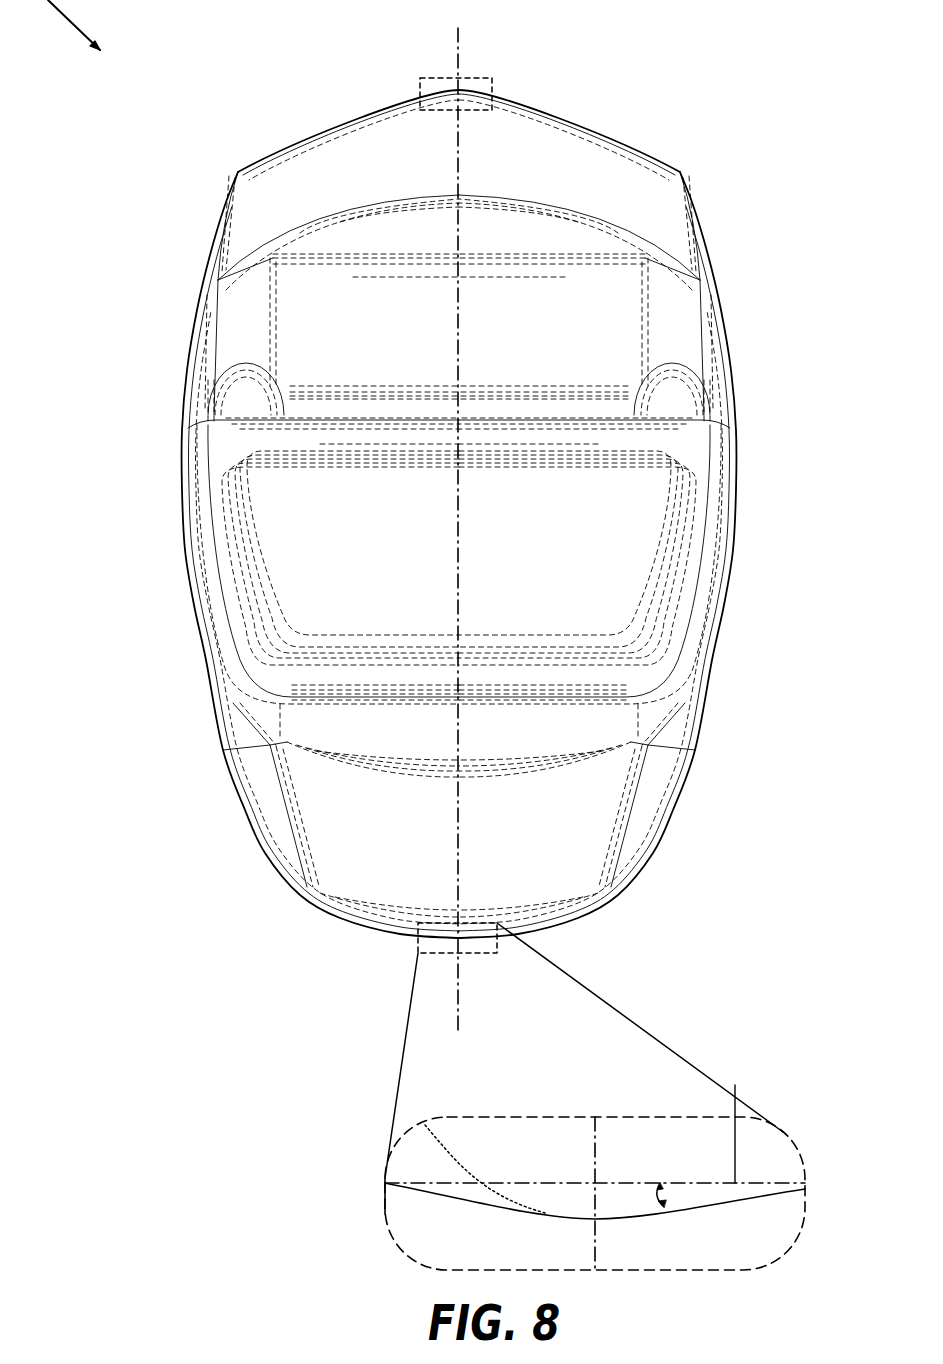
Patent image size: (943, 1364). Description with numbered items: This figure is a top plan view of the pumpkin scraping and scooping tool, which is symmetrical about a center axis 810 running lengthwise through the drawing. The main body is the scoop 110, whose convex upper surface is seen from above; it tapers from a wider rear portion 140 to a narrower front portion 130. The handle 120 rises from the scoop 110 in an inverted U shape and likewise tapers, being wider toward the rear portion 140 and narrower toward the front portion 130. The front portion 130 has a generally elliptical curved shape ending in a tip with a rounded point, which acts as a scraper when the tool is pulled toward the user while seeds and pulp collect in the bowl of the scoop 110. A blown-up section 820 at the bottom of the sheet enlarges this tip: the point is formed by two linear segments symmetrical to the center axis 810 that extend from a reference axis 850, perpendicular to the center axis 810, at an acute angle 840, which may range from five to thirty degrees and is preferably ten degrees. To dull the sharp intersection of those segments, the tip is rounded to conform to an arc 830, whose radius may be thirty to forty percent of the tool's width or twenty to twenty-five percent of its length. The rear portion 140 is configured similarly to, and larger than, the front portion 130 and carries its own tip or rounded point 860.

The scoop 110 is at (283, 850).
The handle 120 is at (593, 562).
The front portion 130 is at (382, 933).
The rear portion 140 is at (376, 106).
The center axis 810 is at (460, 507).
The blown-up section 820 is at (385, 1212).
The arc 830 is at (443, 1140).
The acute angle 840 is at (668, 1206).
The reference axis 850 is at (735, 1085).
The rounded point 860 is at (492, 80).